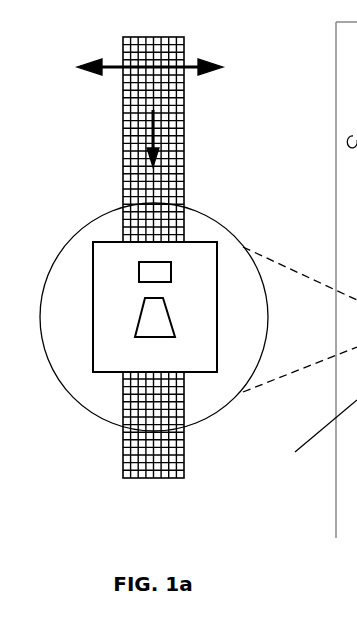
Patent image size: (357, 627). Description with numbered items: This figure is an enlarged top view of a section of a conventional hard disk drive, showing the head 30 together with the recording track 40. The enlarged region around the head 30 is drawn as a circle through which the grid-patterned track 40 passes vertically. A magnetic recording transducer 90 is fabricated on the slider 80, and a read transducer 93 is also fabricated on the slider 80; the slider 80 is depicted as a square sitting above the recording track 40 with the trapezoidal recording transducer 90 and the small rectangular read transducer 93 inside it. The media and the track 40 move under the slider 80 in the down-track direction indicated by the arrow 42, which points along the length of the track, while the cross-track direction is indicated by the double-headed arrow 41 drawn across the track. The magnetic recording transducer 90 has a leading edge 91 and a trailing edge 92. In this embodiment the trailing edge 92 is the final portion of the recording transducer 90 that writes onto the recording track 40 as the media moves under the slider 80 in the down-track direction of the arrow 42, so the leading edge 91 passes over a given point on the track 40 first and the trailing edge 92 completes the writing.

The head 30 is at (223, 412).
The track 40 is at (155, 37).
The arrow 41 is at (221, 67).
The arrow 42 is at (155, 135).
The slider 80 is at (93, 308).
The magnetic recording transducer 90 is at (153, 317).
The leading edge 91 is at (152, 297).
The trailing edge 92 is at (157, 338).
The read transducer 93 is at (139, 269).